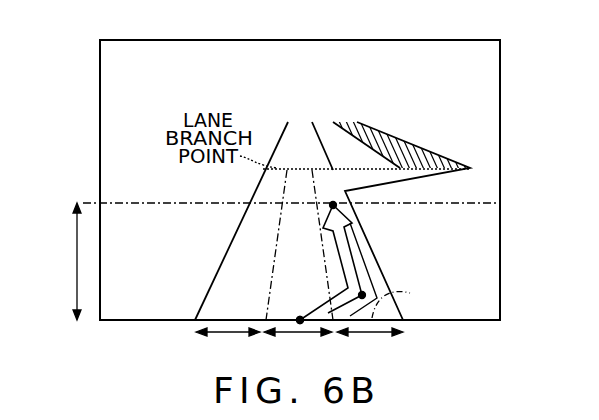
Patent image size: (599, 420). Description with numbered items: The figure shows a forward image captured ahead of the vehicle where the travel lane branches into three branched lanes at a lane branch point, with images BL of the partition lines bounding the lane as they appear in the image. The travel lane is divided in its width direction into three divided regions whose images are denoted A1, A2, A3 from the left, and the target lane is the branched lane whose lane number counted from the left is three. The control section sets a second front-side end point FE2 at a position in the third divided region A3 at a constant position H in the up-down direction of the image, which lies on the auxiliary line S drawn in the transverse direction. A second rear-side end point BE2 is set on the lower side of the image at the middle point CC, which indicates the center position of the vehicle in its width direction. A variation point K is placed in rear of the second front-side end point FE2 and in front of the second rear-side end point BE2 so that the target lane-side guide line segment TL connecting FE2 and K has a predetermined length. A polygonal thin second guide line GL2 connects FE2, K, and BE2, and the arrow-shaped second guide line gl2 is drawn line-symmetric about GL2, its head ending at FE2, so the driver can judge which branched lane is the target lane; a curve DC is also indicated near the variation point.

The image of partition line BL is at (284, 130).
The auxiliary line S is at (117, 203).
The constant position in the up-down direction H is at (55, 261).
The second front-side end point FE2 is at (332, 204).
The target lane-side guide line segment TL is at (348, 238).
The second guide line GL2 is at (365, 256).
The variation point K is at (375, 283).
The detection circle DC is at (410, 293).
The arrow-shaped second guide line gl2 is at (347, 275).
The middle point CC is at (299, 319).
The second rear-side end point BE2 is at (204, 305).
The image of first divided region A1 is at (228, 345).
The image of second divided region A2 is at (298, 345).
The image of third divided region A3 is at (370, 345).